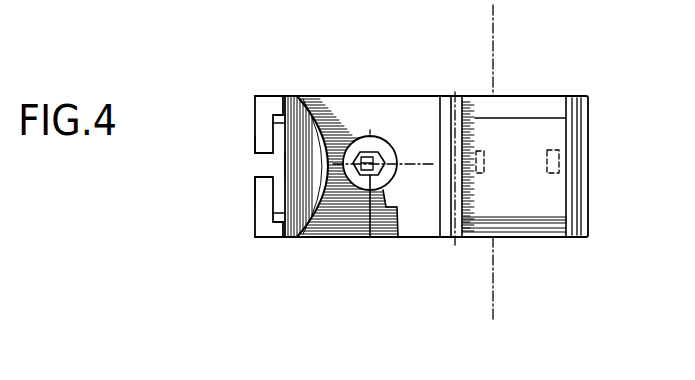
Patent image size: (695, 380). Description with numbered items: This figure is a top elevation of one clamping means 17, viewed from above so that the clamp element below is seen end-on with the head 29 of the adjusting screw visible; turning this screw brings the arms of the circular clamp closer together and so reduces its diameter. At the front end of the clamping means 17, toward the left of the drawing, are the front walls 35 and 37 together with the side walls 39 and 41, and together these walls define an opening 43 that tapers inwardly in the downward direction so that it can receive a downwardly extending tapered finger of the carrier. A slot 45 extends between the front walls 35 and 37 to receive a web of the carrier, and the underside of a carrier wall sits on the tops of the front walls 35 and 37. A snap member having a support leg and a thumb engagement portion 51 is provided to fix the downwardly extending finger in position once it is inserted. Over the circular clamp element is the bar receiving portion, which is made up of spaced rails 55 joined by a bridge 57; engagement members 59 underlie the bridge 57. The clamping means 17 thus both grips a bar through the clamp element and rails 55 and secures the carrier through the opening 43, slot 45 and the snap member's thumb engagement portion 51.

The clamping means 17 is at (612, 126).
The head 29 is at (397, 237).
The front wall 35 is at (257, 137).
The front wall 37 is at (257, 193).
The side wall 39 is at (268, 102).
The side wall 41 is at (273, 232).
The opening 43 is at (277, 166).
The slot 45 is at (267, 163).
The thumb engagement portion 51 is at (318, 157).
The rails 55 is at (577, 220).
The bridge 57 is at (523, 195).
The engagement members 59 is at (478, 152).